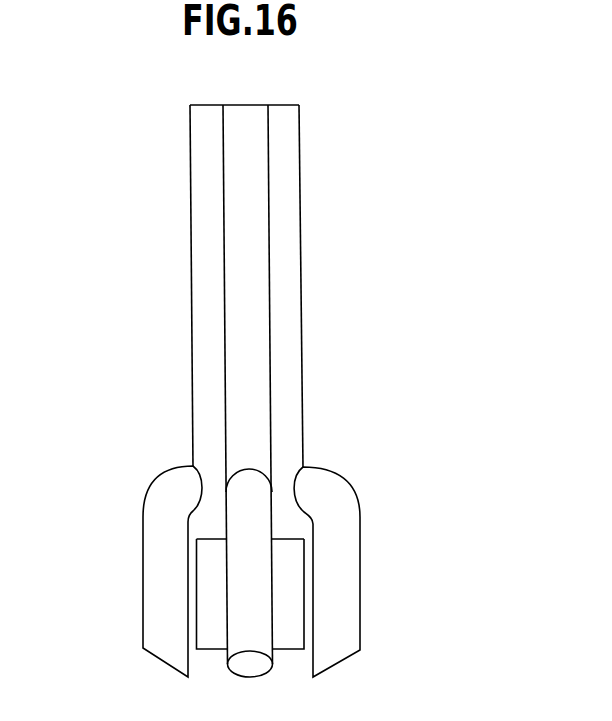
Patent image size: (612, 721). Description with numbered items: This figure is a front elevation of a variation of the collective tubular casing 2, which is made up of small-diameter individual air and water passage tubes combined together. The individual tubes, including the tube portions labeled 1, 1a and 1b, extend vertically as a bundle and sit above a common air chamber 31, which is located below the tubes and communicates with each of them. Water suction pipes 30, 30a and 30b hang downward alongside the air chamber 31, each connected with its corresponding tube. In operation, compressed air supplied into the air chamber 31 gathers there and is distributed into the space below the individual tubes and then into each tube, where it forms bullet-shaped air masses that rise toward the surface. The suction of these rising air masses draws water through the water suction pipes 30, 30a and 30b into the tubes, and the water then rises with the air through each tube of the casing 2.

The contact bar 1 is at (205, 320).
The central portion of contact bar 1a is at (250, 307).
The side portion of contact bar 1b is at (285, 242).
The collective tubular casing 2 is at (263, 384).
The water suction pipe 30 is at (163, 548).
The water suction pipe 30a is at (248, 593).
The water suction pipe 30b is at (338, 592).
The common air chamber 31 is at (289, 568).